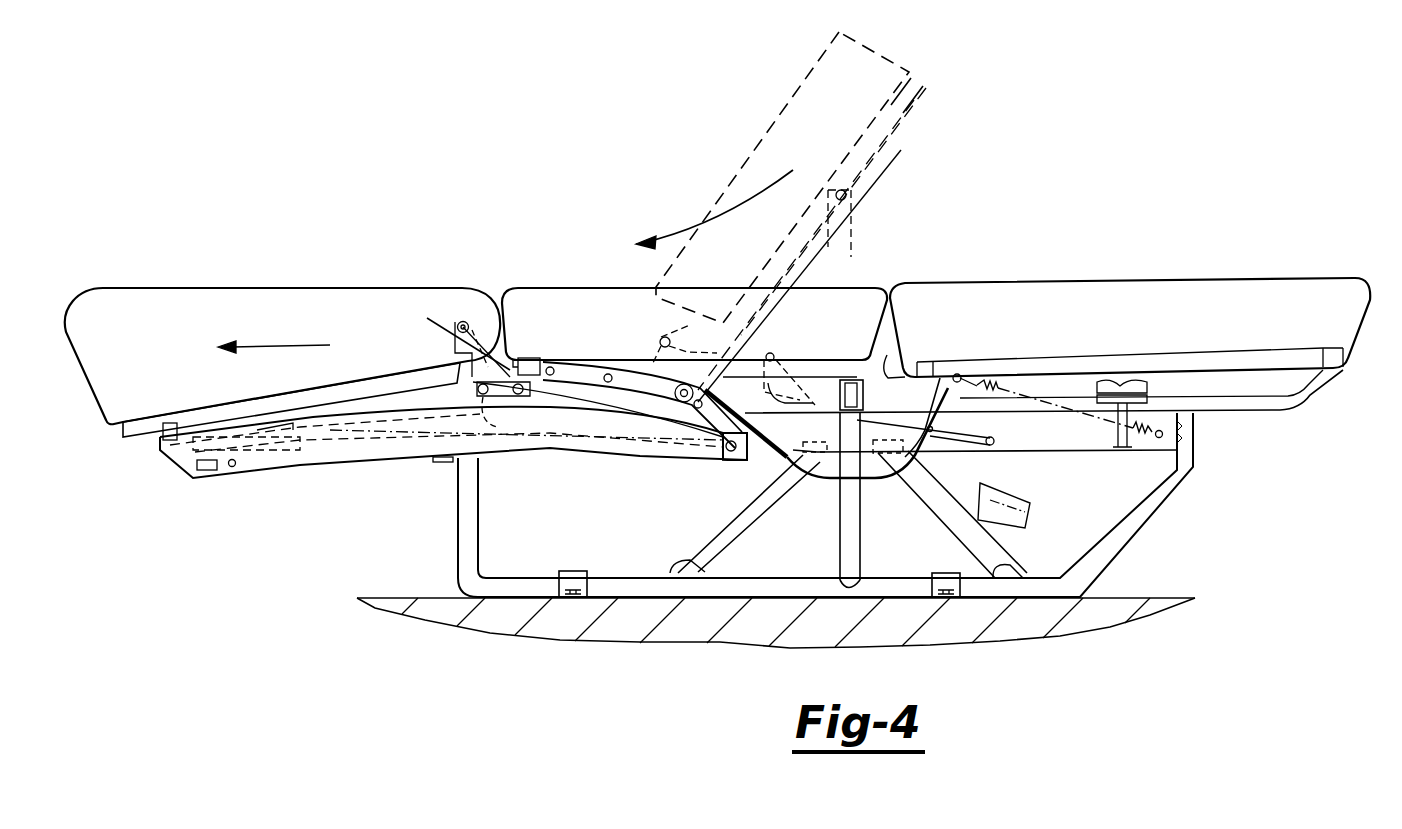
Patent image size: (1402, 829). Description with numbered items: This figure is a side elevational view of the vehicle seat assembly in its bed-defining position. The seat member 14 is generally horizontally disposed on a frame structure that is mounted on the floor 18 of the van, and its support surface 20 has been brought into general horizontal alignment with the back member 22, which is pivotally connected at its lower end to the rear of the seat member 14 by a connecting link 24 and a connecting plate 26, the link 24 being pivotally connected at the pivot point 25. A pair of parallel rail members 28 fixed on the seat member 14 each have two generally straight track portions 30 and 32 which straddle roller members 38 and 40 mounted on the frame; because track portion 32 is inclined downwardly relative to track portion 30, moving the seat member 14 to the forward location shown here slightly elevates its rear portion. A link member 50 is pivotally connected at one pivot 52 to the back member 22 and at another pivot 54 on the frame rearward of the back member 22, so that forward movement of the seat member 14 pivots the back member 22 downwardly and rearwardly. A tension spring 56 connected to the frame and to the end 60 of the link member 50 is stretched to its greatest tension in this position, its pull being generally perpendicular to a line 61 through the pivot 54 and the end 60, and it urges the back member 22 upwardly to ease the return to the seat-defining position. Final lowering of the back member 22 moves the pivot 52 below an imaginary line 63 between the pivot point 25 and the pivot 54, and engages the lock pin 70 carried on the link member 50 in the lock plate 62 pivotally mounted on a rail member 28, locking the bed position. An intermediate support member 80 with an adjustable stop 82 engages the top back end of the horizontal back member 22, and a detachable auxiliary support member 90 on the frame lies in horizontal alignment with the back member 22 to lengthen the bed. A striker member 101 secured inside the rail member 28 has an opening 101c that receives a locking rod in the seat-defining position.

The seat member 14 is at (223, 288).
The floor 18 is at (1113, 598).
The support surface 20 is at (343, 289).
The back member 22 is at (604, 268).
The connecting link 24 is at (567, 372).
The pivot point 25 is at (474, 325).
The connecting plate 26 is at (456, 343).
The rail member 28 is at (370, 460).
The track portion 30 is at (303, 463).
The track portion 32 is at (583, 430).
The roller member 38 is at (490, 450).
The roller member 40 is at (724, 462).
The link member 50 is at (817, 478).
The pivot 52 is at (662, 344).
The pivot 54 is at (925, 448).
The tension spring 56 is at (1060, 420).
The end of link member 60 is at (955, 330).
The line 61 is at (965, 365).
The lock plate 62 is at (697, 412).
The imaginary line 63 is at (851, 432).
The lock pin 70 is at (772, 345).
The intermediate support member 80 is at (864, 393).
The adjustable stop 82 is at (888, 355).
The auxiliary support member 90 is at (1108, 280).
The striker member 101 is at (193, 477).
The opening 101c is at (233, 463).